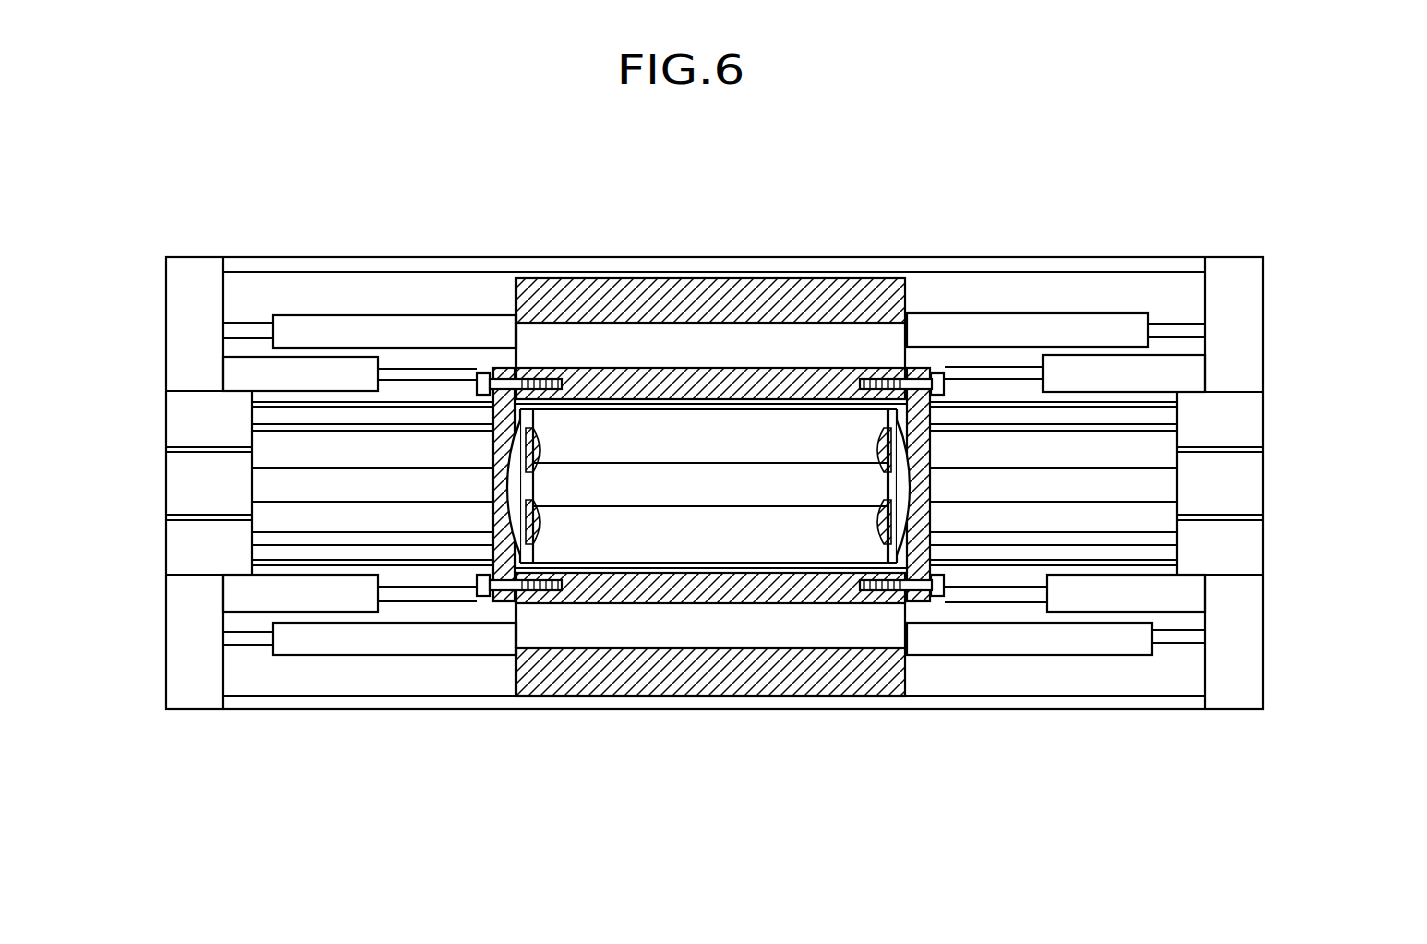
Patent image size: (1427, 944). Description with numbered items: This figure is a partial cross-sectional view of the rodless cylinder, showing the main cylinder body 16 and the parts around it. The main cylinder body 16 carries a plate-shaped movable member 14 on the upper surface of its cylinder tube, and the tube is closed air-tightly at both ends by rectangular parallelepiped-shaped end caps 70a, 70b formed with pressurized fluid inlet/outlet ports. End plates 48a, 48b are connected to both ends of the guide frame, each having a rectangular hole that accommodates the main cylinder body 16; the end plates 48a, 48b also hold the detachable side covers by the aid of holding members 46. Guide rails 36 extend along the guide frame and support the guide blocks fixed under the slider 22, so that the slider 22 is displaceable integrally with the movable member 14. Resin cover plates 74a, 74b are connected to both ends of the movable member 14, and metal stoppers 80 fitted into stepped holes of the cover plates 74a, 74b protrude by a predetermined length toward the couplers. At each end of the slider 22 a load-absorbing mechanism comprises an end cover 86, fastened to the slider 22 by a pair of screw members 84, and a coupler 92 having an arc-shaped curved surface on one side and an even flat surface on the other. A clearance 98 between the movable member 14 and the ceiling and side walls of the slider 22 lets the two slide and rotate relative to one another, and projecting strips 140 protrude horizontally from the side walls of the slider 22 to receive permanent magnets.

The movable member 14 is at (750, 425).
The main cylinder body 16 is at (1143, 488).
The slider 22 is at (715, 285).
The guide rail 36 is at (1008, 330).
The holding member 46 is at (249, 372).
The end plate 48a is at (190, 683).
The end plate 48b is at (1243, 693).
The end cap 70a is at (198, 500).
The end cap 70b is at (1242, 492).
The cover plate 74a is at (547, 480).
The cover plate 74b is at (873, 486).
The stopper 80 is at (542, 438).
The screw member 84 is at (485, 372).
The end cover 86 is at (492, 428).
The coupler 92 is at (493, 507).
The clearance 98 is at (780, 567).
The projecting strip 140 is at (615, 283).